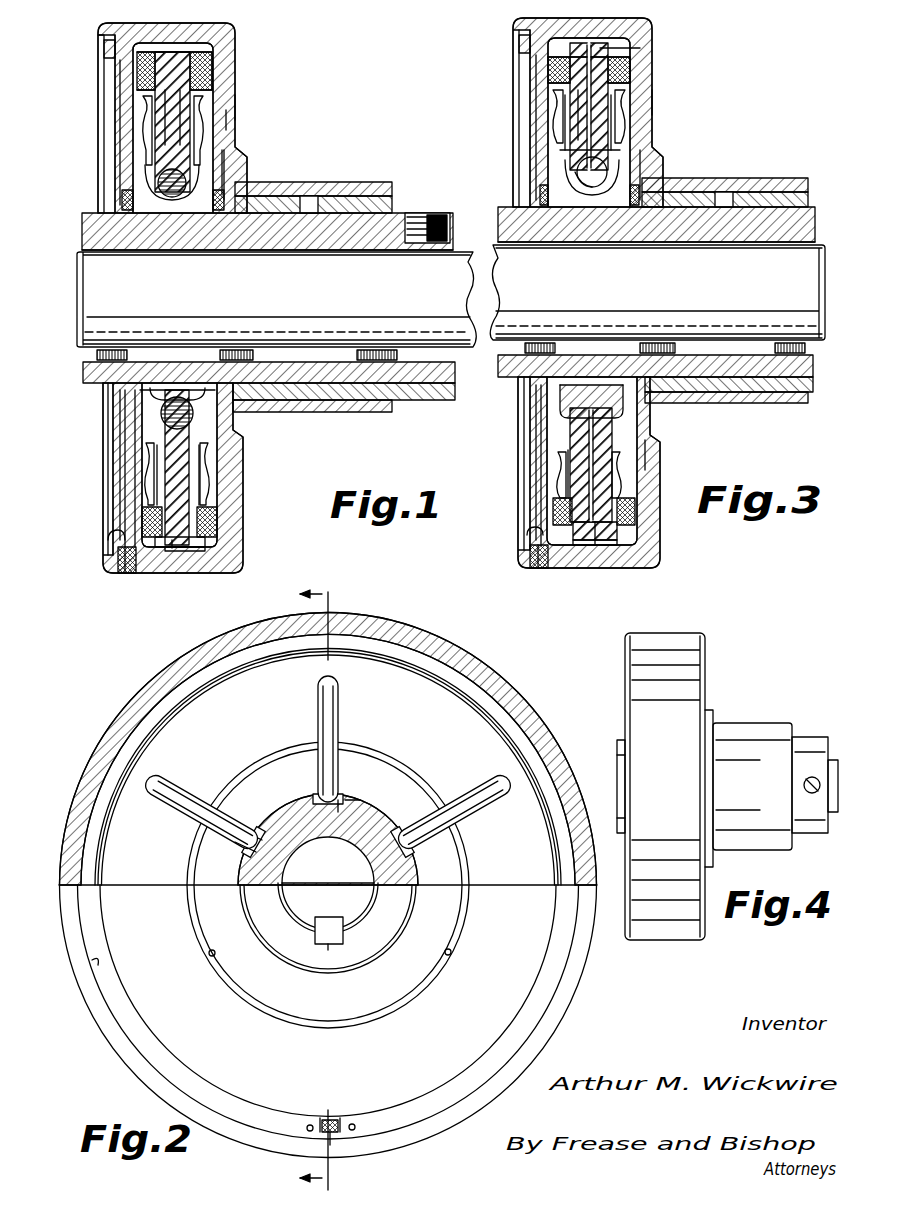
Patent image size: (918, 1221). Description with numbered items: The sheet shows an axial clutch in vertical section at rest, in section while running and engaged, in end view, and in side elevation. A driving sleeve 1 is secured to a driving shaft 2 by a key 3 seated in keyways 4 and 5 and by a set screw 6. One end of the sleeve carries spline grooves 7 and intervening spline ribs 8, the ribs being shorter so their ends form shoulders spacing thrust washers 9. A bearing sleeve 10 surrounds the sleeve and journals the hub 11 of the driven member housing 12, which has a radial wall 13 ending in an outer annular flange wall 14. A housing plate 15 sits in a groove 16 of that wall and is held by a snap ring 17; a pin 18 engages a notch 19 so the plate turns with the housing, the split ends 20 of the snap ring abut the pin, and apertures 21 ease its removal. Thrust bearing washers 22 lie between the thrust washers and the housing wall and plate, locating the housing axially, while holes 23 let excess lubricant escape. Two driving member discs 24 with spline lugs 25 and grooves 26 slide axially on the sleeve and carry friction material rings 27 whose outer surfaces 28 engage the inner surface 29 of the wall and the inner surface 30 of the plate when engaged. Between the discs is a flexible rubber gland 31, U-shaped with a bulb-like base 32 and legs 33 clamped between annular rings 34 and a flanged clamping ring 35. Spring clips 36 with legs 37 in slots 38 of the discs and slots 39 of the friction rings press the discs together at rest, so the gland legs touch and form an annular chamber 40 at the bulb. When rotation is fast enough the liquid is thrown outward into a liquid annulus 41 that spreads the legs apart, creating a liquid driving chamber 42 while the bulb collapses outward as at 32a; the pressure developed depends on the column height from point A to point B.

In FIG. 1, the driving sleeve 1 is at (395, 225).
In FIG. 3, the driving sleeve 1 is at (776, 225).
In FIG. 2, the driving sleeve 1 is at (370, 942).
In FIG. 4, the driving sleeve 1 is at (805, 745).
In FIG. 1, the driving shaft 2 is at (276, 299).
In FIG. 3, the driving shaft 2 is at (657, 292).
In FIG. 2, the driving shaft 2 is at (328, 908).
In FIG. 4, the driving shaft 2 is at (836, 765).
In FIG. 1, the key 3 is at (440, 352).
In FIG. 3, the key 3 is at (800, 386).
In FIG. 2, the key 3 is at (314, 931).
In FIG. 1, the keyway 4 is at (411, 385).
In FIG. 3, the keyway 4 is at (770, 394).
In FIG. 2, the keyway 4 is at (322, 946).
In FIG. 1, the keyway 5 is at (347, 331).
In FIG. 3, the keyway 5 is at (746, 318).
In FIG. 2, the keyway 5 is at (348, 910).
In FIG. 1, the set screw 6 is at (432, 215).
In FIG. 4, the set screw 6 is at (804, 786).
In FIG. 1, the spline grooves 7 is at (92, 232).
In FIG. 3, the spline grooves 7 is at (520, 244).
In FIG. 2, the spline grooves 7 is at (357, 802).
In FIG. 1, the spline ribs 8 is at (136, 214).
In FIG. 3, the spline ribs 8 is at (552, 244).
In FIG. 2, the spline ribs 8 is at (287, 805).
In FIG. 1, the thrust washers 9 is at (128, 214).
In FIG. 3, the thrust washers 9 is at (545, 244).
In FIG. 1, the bearing sleeve 10 is at (355, 200).
In FIG. 3, the bearing sleeve 10 is at (805, 190).
In FIG. 1, the hub 11 is at (330, 182).
In FIG. 3, the hub 11 is at (760, 178).
In FIG. 4, the hub 11 is at (754, 740).
In FIG. 1, the driven member housing 12 is at (238, 92).
In FIG. 3, the driven member housing 12 is at (660, 62).
In FIG. 1, the radial wall 13 is at (228, 118).
In FIG. 3, the radial wall 13 is at (650, 458).
In FIG. 1, the annular flange wall 14 is at (205, 32).
In FIG. 3, the annular flange wall 14 is at (628, 565).
In FIG. 2, the annular flange wall 14 is at (505, 690).
In FIG. 4, the annular flange wall 14 is at (676, 648).
In FIG. 1, the housing plate 15 is at (118, 105).
In FIG. 3, the housing plate 15 is at (534, 72).
In FIG. 2, the housing plate 15 is at (212, 1030).
In FIG. 1, the groove 16 is at (110, 33).
In FIG. 3, the groove 16 is at (525, 32).
In FIG. 2, the groove 16 is at (96, 965).
In FIG. 1, the snap ring 17 is at (108, 52).
In FIG. 3, the snap ring 17 is at (524, 46).
In FIG. 2, the snap ring 17 is at (128, 1022).
In FIG. 1, the pin 18 is at (125, 575).
In FIG. 3, the pin 18 is at (542, 570).
In FIG. 2, the pin 18 is at (333, 1146).
In FIG. 1, the notch 19 is at (115, 533).
In FIG. 3, the notch 19 is at (535, 533).
In FIG. 2, the notch 19 is at (332, 1118).
In FIG. 1, the split ends 20 is at (115, 550).
In FIG. 3, the split ends 20 is at (528, 547).
In FIG. 2, the split ends 20 is at (320, 1116).
In FIG. 2, the apertures 21 is at (308, 1132).
In FIG. 1, the thrust bearing washers 22 is at (225, 195).
In FIG. 3, the thrust bearing washers 22 is at (546, 378).
In FIG. 1, the holes 23 is at (238, 158).
In FIG. 3, the holes 23 is at (652, 155).
In FIG. 2, the holes 23 is at (210, 955).
In FIG. 1, the driving member discs 24 is at (195, 466).
In FIG. 3, the driving member discs 24 is at (556, 490).
In FIG. 2, the driving member discs 24 is at (328, 885).
In FIG. 2, the spline lugs 25 is at (345, 795).
In FIG. 2, the spline grooves 26 is at (362, 795).
In FIG. 1, the friction material rings 27 is at (150, 74).
In FIG. 3, the friction material rings 27 is at (553, 80).
In FIG. 2, the friction material rings 27 is at (454, 812).
In FIG. 1, the outer surfaces 28 is at (150, 85).
In FIG. 3, the outer surfaces 28 is at (640, 72).
In FIG. 2, the outer surfaces 28 is at (400, 680).
In FIG. 1, the inner surface 29 is at (218, 545).
In FIG. 3, the inner surface 29 is at (626, 510).
In FIG. 1, the inner surface 30 is at (130, 514).
In FIG. 3, the inner surface 30 is at (560, 497).
In FIG. 1, the gland 31 is at (190, 452).
In FIG. 3, the gland 31 is at (612, 453).
In FIG. 1, the bulb-like shape 32 is at (160, 428).
In FIG. 3, the collapsed bulb-like cavity 32a is at (612, 180).
In FIG. 1, the legs 33 is at (165, 128).
In FIG. 3, the legs 33 is at (580, 108).
In FIG. 1, the annular rings 34 is at (200, 548).
In FIG. 3, the annular rings 34 is at (578, 546).
In FIG. 2, the annular rings 34 is at (158, 725).
In FIG. 1, the flanged annular clamping ring 35 is at (180, 548).
In FIG. 3, the flanged annular clamping ring 35 is at (592, 546).
In FIG. 2, the flanged annular clamping ring 35 is at (182, 693).
In FIG. 1, the spring clips 36 is at (205, 110).
In FIG. 3, the spring clips 36 is at (515, 110).
In FIG. 1, the legs 37 is at (205, 140).
In FIG. 3, the legs 37 is at (555, 135).
In FIG. 2, the legs 37 is at (326, 712).
In FIG. 1, the slots 38 is at (205, 418).
In FIG. 3, the slots 38 is at (565, 435).
In FIG. 2, the slots 38 is at (228, 840).
In FIG. 1, the slots 39 is at (212, 486).
In FIG. 3, the slots 39 is at (567, 455).
In FIG. 2, the slots 39 is at (172, 802).
In FIG. 1, the annular chamber 40 is at (195, 405).
In FIG. 3, the liquid annulus 41 is at (630, 120).
In FIG. 3, the liquid driving chamber 42 is at (600, 110).
In FIG. 3, the point A is at (612, 150).
In FIG. 3, the point B is at (622, 48).